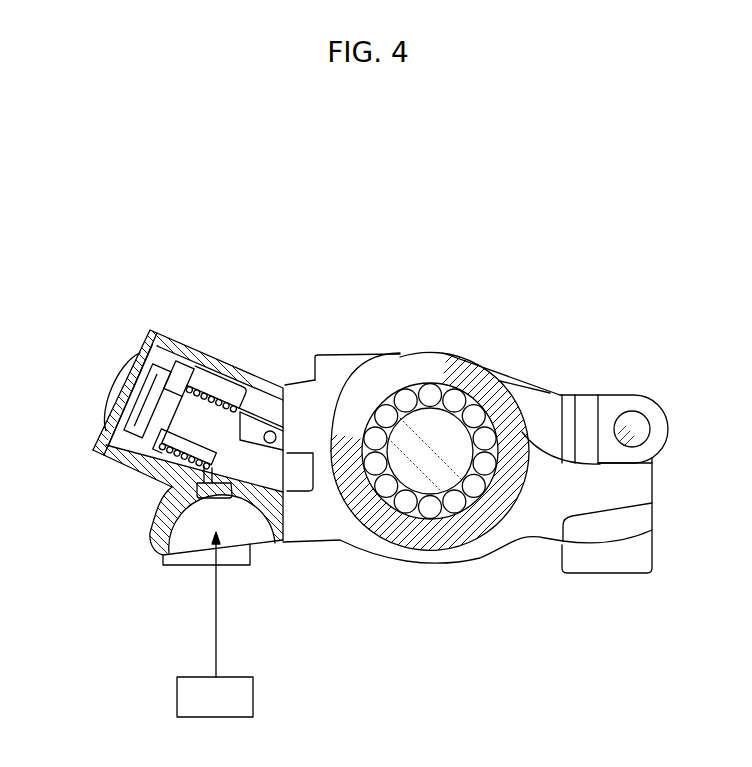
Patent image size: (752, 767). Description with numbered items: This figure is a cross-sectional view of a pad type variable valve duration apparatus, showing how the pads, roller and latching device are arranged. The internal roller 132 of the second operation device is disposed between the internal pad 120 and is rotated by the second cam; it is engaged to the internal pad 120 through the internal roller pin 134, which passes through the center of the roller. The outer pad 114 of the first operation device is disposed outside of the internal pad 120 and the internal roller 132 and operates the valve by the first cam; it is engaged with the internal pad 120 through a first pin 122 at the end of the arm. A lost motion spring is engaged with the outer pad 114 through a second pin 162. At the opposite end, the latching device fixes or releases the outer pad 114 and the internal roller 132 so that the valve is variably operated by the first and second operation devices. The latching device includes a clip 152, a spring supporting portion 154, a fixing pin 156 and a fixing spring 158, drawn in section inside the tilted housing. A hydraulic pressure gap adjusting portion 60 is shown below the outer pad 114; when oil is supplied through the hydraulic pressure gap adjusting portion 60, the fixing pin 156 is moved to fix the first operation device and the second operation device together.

The hydraulic pressure gap adjusting portion 60 is at (177, 697).
The outer pad 114 is at (330, 523).
The internal pad 120 is at (582, 405).
The first pin 122 is at (633, 412).
The internal roller 132 is at (437, 368).
The internal roller pin 134 is at (452, 483).
The clip 152 is at (143, 357).
The spring supporting portion 154 is at (105, 418).
The fixing pin 156 is at (165, 415).
The fixing spring 158 is at (206, 388).
The second pin 162 is at (268, 430).